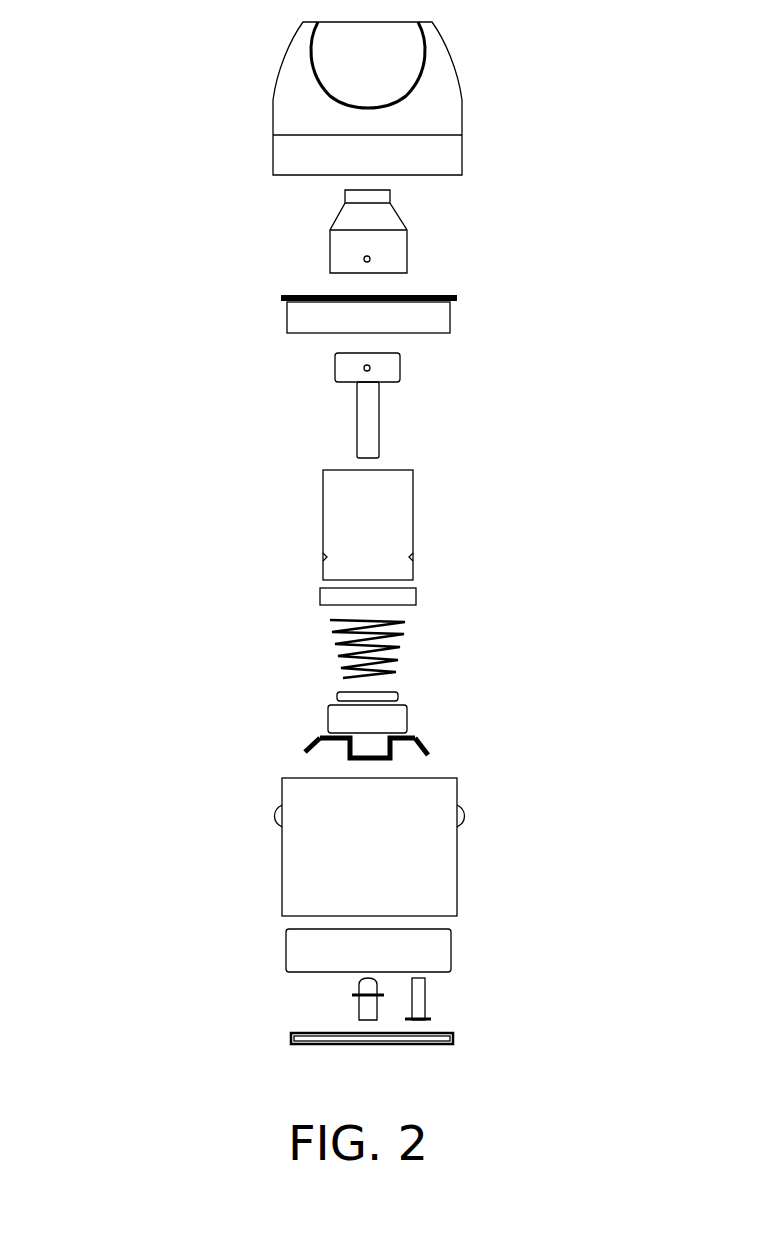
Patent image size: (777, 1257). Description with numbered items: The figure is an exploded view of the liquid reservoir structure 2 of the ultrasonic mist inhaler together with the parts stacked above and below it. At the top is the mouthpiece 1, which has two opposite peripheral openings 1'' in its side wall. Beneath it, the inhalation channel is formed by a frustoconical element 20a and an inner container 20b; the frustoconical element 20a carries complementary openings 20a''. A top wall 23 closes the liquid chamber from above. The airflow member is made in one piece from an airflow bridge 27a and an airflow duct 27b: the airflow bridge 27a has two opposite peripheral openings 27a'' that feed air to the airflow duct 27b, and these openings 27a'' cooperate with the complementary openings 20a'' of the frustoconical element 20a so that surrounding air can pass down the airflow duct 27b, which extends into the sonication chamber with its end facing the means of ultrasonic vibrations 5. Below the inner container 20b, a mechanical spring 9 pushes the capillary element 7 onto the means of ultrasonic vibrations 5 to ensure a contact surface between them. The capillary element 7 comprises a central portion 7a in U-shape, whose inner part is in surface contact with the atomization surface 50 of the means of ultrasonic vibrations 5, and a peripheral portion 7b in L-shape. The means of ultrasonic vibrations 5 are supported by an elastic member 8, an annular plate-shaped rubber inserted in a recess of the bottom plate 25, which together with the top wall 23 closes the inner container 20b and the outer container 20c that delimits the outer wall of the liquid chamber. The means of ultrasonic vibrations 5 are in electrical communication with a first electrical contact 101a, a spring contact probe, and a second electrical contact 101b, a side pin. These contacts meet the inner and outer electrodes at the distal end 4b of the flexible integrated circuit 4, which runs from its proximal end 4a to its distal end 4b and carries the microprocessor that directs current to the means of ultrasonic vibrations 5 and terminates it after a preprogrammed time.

The mouthpiece 1 is at (367, 93).
The peripheral openings 1'' is at (460, 68).
The liquid reservoir structure 2 is at (128, 385).
The frustoconical element 20a is at (367, 217).
The complementary openings 20a'' is at (459, 236).
The top wall 23 is at (440, 323).
The airflow bridge 27a is at (398, 387).
The peripheral openings 27a'' is at (482, 382).
The airflow duct 27b is at (392, 413).
The inner container 20b is at (416, 524).
The mechanical spring 9 is at (328, 643).
The atomization surface 50 is at (390, 690).
The means of ultrasonic vibrations 5 is at (429, 659).
The elastic member 8 is at (408, 718).
The capillary element 7 is at (381, 752).
The central portion 7a is at (362, 768).
The peripheral portion 7b is at (432, 758).
The outer container 20c is at (458, 887).
The bottom wall 25 is at (453, 948).
The first electrical contact 101a is at (355, 982).
The second electrical contact 101b is at (426, 1003).
The integrated circuit 4 is at (370, 1027).
The proximal end 4a is at (455, 1030).
The distal end 4b is at (440, 1058).